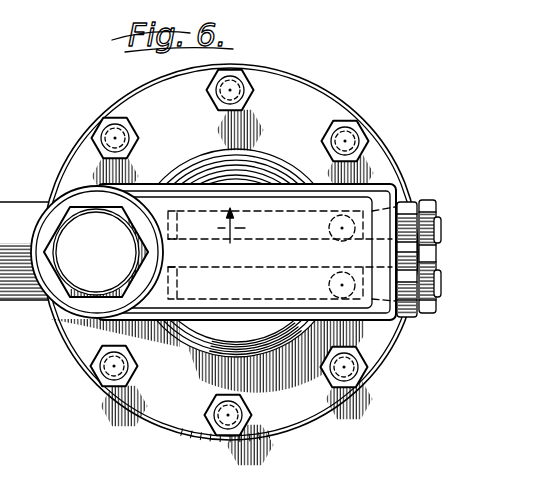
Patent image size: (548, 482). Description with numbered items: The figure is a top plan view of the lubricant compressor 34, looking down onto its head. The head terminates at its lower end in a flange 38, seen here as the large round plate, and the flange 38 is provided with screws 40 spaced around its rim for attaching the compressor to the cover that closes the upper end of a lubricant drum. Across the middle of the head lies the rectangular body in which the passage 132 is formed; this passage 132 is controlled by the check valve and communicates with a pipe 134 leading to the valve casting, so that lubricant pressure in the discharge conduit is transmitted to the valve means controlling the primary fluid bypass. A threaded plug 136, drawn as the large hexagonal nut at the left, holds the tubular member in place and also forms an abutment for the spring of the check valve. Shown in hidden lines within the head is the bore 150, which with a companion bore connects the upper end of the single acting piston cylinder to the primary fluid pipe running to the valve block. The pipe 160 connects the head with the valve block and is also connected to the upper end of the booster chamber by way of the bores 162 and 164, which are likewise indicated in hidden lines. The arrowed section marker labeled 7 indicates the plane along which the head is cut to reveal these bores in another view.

The section line arrows 7 is at (231, 235).
The compressor 34 is at (212, 260).
The flange 38 is at (190, 426).
The screws 40 is at (243, 90).
The passage 132 is at (255, 220).
The pipe 134 is at (426, 201).
The threaded plug 136 is at (97, 252).
The bore 150 is at (340, 215).
The pipe 160 is at (422, 317).
The bore 162 is at (336, 295).
The bore 164 is at (208, 289).